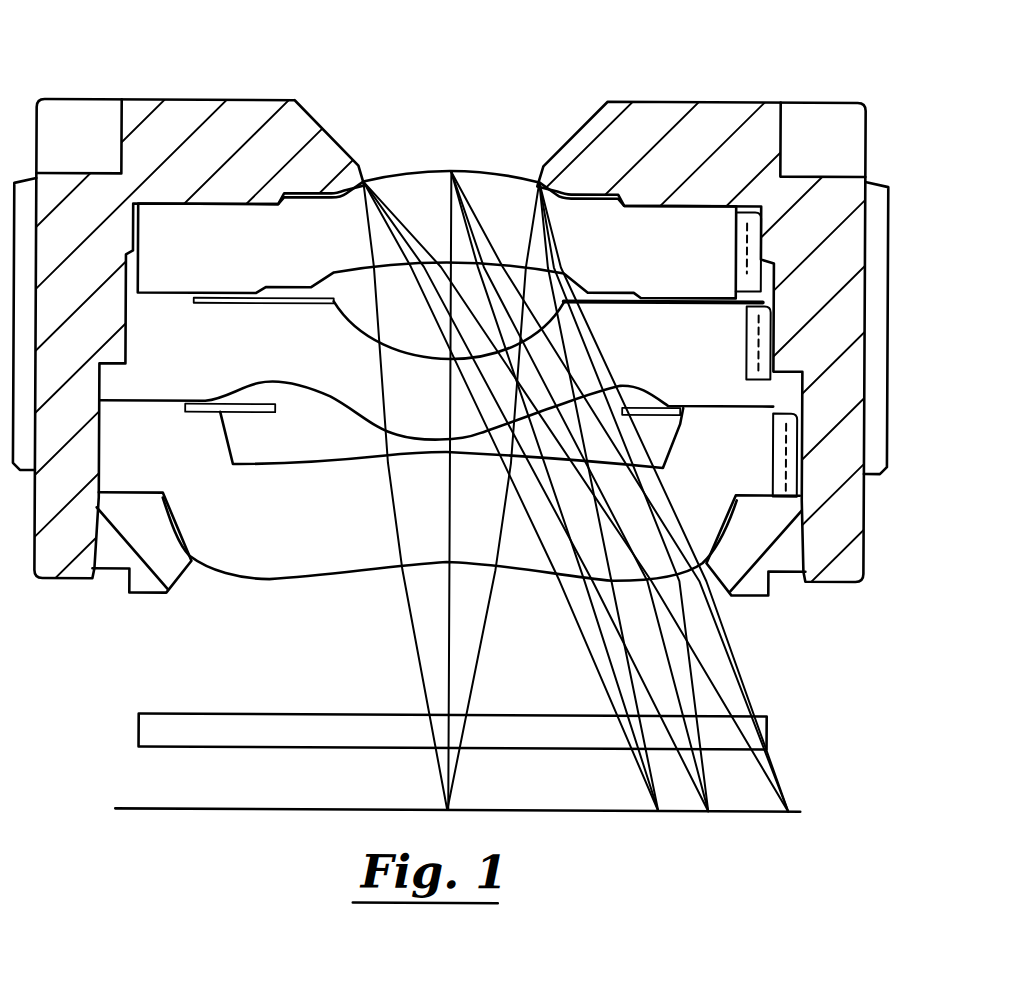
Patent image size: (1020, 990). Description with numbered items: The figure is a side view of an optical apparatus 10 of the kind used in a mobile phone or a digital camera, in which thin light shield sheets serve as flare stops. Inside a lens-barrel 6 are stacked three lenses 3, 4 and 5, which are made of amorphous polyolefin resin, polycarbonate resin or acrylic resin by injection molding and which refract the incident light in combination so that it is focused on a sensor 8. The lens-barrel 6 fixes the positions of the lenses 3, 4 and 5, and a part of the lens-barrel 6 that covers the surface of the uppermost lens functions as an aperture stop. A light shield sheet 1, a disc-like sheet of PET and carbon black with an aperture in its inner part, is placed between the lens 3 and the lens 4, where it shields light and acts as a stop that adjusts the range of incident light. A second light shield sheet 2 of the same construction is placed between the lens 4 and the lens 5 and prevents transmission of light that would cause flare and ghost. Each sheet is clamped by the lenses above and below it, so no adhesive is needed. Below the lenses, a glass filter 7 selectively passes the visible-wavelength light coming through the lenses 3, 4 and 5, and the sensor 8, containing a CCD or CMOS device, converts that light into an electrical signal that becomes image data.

The light shield sheet 1 is at (237, 292).
The light shield sheet 2 is at (185, 402).
The lens 3 is at (665, 287).
The lens 4 is at (722, 404).
The lens 5 is at (752, 594).
The lens-barrel 6 is at (860, 561).
The filter 7 is at (143, 735).
The sensor 8 is at (136, 812).
The optical apparatus 10 is at (771, 84).